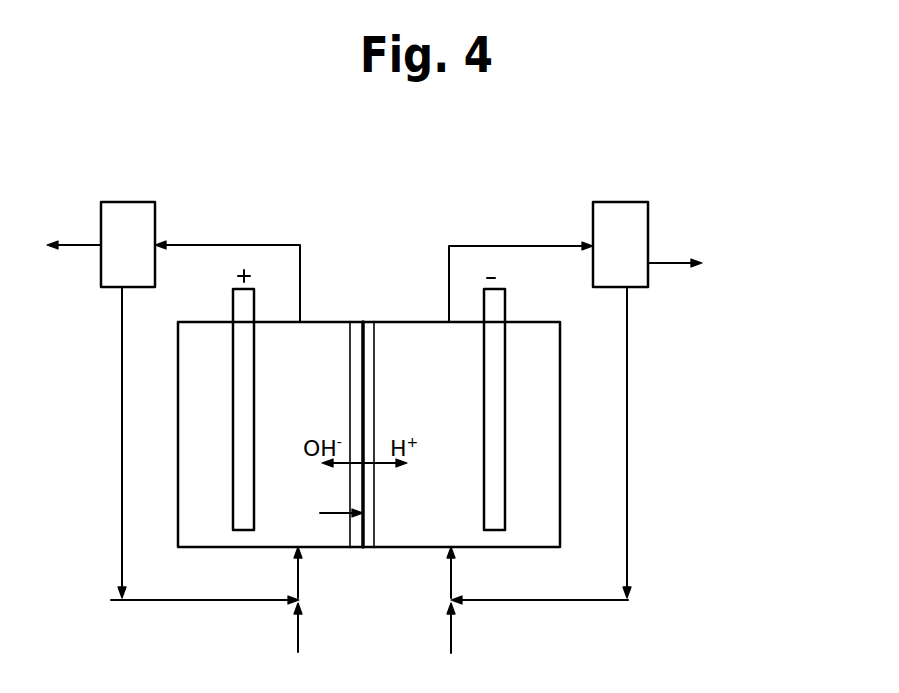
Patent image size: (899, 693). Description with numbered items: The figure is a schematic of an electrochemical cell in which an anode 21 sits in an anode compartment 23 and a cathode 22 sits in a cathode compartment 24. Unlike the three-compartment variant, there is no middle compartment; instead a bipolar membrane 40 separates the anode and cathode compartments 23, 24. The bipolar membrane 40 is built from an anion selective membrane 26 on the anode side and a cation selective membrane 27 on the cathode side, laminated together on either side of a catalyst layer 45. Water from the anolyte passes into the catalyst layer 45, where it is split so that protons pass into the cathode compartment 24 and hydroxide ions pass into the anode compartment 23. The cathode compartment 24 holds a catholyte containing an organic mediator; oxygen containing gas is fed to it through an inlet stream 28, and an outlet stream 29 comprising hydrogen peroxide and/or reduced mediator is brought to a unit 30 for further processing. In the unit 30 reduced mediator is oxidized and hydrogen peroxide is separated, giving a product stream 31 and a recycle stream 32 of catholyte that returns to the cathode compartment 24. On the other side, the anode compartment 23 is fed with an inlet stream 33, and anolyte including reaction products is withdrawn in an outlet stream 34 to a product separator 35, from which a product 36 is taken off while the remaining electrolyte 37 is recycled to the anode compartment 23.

The anode 21 is at (242, 312).
The cathode 22 is at (495, 305).
The anode compartment 23 is at (200, 412).
The cathode compartment 24 is at (517, 412).
The anion selective membrane 26 is at (350, 410).
The cation selective membrane 27 is at (373, 420).
The inlet stream 28 is at (451, 620).
The outlet stream 29 is at (480, 246).
The unit 30 is at (648, 240).
The product stream 31 is at (680, 272).
The recycle stream 32 is at (627, 532).
The inlet stream 33 is at (297, 625).
The outlet stream 34 is at (257, 242).
The product separator 35 is at (155, 217).
The product 36 is at (70, 243).
The remaining electrolyte 37 is at (122, 535).
The bipolar membrane 40 is at (367, 548).
The catalyst layer 45 is at (365, 532).